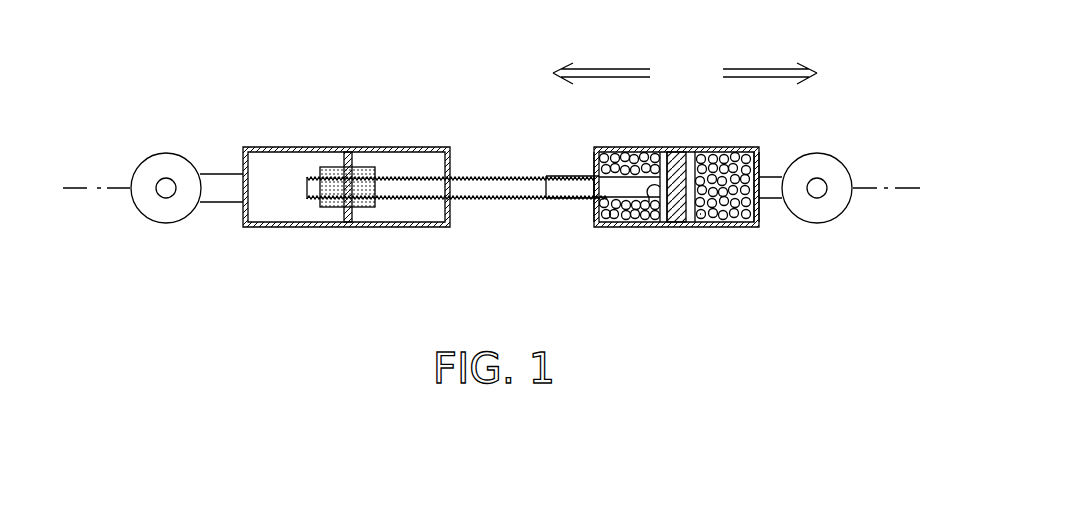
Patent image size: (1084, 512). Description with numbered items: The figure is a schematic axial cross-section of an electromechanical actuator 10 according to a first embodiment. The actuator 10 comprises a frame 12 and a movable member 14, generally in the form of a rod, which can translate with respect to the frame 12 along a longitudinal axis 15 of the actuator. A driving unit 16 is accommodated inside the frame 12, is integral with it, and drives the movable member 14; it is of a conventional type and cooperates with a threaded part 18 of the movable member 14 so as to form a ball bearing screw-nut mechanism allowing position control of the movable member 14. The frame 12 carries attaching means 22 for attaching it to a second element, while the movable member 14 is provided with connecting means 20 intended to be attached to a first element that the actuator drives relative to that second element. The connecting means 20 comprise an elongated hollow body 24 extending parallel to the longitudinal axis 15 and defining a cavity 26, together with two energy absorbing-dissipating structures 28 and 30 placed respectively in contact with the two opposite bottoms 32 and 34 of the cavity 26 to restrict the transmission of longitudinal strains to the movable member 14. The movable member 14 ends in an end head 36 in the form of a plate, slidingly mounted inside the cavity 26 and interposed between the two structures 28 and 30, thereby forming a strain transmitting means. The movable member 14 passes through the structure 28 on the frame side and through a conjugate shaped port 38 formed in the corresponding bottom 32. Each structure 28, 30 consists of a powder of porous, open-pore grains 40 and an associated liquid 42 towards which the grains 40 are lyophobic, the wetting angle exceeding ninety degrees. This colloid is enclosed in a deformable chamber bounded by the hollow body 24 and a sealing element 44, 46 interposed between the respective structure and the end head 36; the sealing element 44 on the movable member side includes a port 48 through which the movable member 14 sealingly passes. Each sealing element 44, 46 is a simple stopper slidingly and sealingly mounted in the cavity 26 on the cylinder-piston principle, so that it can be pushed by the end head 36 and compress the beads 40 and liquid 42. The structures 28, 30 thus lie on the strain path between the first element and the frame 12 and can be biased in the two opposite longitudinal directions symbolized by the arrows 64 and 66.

The electromechanical actuator 10 is at (402, 259).
The frame 12 is at (259, 138).
The movable member 14 is at (534, 167).
The longitudinal axis 15 is at (906, 192).
The driving unit 16 is at (367, 168).
The threaded part 18 is at (464, 185).
The connecting means 20 is at (775, 205).
The attaching means 22 is at (172, 212).
The hollow body 24 is at (623, 228).
The cavity 26 is at (746, 228).
The energy absorbing-dissipating structure 28 is at (605, 222).
The energy absorbing-dissipating structure 30 is at (710, 222).
The bottom 32 is at (594, 166).
The bottom 34 is at (760, 160).
The end head 36 is at (676, 223).
The port 38 is at (594, 200).
The grains 40 is at (611, 157).
The liquid 42 is at (634, 160).
The sealing element 44 is at (670, 156).
The sealing element 46 is at (701, 158).
The port 48 is at (652, 206).
The arrow 64 is at (604, 73).
The arrow 66 is at (766, 73).